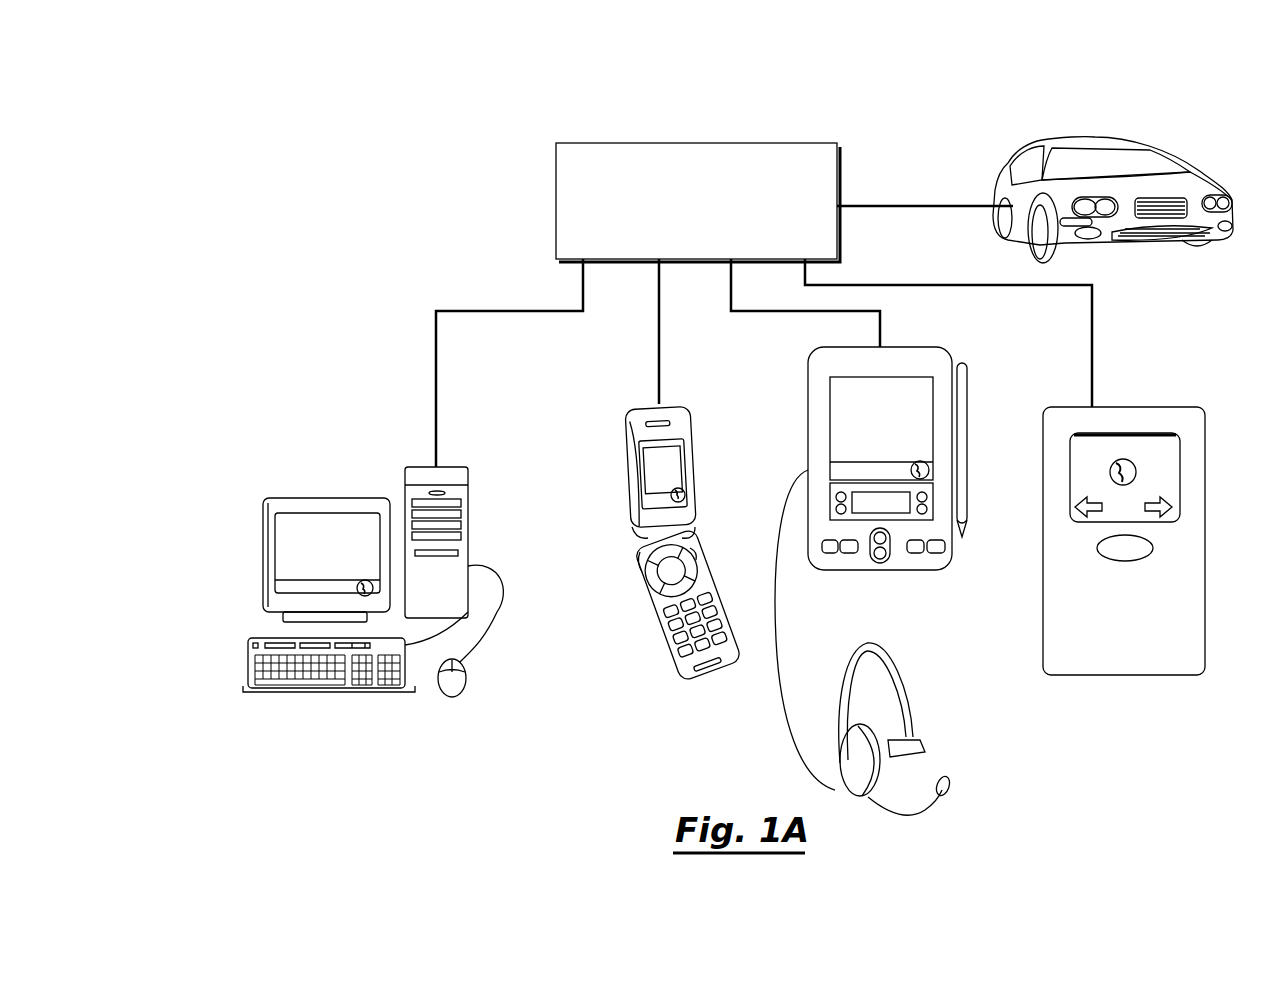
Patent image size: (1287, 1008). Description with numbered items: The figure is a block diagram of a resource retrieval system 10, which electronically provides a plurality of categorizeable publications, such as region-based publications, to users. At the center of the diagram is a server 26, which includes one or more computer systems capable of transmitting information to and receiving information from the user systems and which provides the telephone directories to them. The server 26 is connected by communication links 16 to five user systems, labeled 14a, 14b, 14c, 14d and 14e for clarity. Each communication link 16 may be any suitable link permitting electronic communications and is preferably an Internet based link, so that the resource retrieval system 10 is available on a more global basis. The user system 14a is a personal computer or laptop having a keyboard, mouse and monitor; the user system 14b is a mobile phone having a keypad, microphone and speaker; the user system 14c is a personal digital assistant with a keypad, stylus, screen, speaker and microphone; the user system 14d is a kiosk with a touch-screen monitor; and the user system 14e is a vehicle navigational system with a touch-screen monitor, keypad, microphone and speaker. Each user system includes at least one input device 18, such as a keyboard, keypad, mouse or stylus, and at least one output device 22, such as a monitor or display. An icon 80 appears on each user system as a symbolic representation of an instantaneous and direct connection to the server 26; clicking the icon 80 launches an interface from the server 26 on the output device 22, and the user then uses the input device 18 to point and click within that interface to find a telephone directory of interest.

The resource retrieval system 10 is at (900, 156).
The server 26 is at (556, 200).
The communication link 16 is at (488, 310).
The user system 14a is at (289, 466).
The user system 14b is at (697, 391).
The user system 14c is at (962, 342).
The user system 14d is at (1174, 393).
The user system 14e is at (1218, 160).
The output device 22 is at (290, 537).
The input device 18 is at (250, 650).
The icon 80 is at (367, 596).